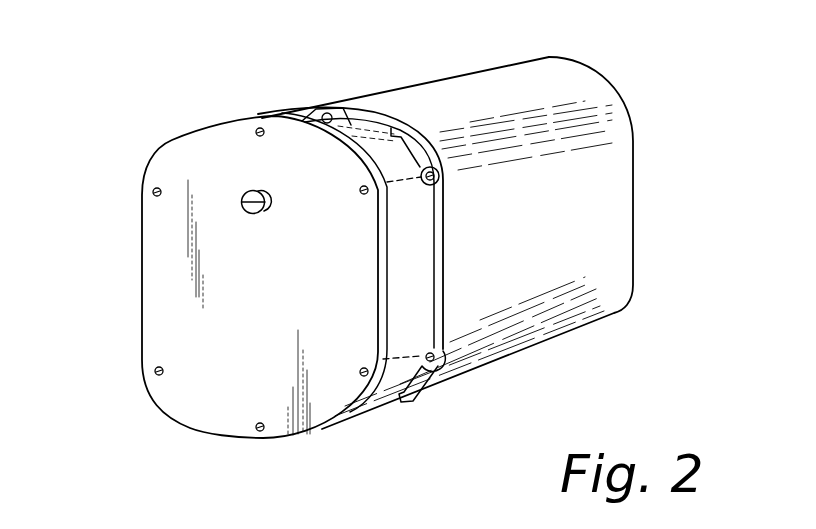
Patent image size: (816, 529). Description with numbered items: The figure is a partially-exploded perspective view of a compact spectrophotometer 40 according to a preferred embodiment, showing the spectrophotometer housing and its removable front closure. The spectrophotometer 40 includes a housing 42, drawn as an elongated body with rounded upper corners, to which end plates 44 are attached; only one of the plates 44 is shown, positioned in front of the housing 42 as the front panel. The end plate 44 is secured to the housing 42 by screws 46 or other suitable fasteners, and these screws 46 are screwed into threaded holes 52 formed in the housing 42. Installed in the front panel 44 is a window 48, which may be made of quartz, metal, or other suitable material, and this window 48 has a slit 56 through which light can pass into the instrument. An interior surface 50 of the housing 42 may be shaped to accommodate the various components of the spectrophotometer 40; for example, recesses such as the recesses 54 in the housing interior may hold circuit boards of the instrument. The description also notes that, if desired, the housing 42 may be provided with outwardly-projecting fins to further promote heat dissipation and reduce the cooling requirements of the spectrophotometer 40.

The spectrophotometer 40 is at (276, 103).
The housing 42 is at (634, 226).
The end plate 44 is at (141, 309).
The screws 46 is at (255, 129).
The window 48 is at (244, 193).
The interior surface 50 is at (429, 279).
The threaded holes 52 is at (439, 362).
The recesses 54 is at (391, 129).
The slit 56 is at (243, 206).